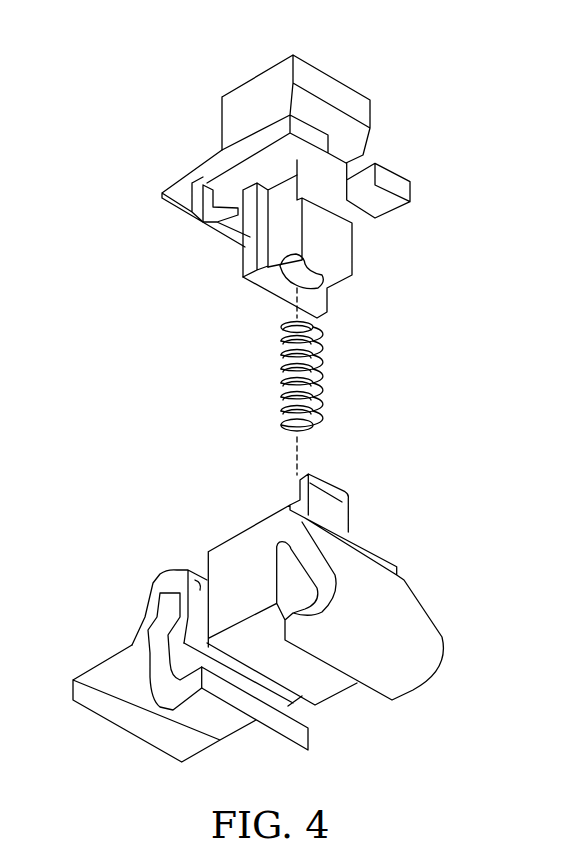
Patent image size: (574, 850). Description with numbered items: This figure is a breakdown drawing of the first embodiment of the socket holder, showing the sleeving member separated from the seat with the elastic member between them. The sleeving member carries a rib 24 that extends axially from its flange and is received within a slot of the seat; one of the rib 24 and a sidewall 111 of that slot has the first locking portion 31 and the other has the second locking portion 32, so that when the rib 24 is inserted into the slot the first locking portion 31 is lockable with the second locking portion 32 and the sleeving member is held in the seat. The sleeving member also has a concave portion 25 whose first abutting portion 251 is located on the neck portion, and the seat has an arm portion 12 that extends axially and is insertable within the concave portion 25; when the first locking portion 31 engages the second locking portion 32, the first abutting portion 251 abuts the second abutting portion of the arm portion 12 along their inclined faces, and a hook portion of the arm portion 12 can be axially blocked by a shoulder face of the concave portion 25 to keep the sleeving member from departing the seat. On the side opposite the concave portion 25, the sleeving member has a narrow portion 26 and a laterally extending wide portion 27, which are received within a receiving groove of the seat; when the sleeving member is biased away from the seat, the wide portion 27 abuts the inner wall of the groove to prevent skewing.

The first abutting portion 251 is at (350, 137).
The rib 24 is at (193, 203).
The second locking portion 32 is at (255, 221).
The wide portion 27 is at (252, 263).
The narrow portion 26 is at (337, 260).
The concave portion 25 is at (330, 192).
The arm portion 12 is at (332, 515).
The first locking portion 31 is at (200, 577).
The sidewall 111 is at (200, 598).